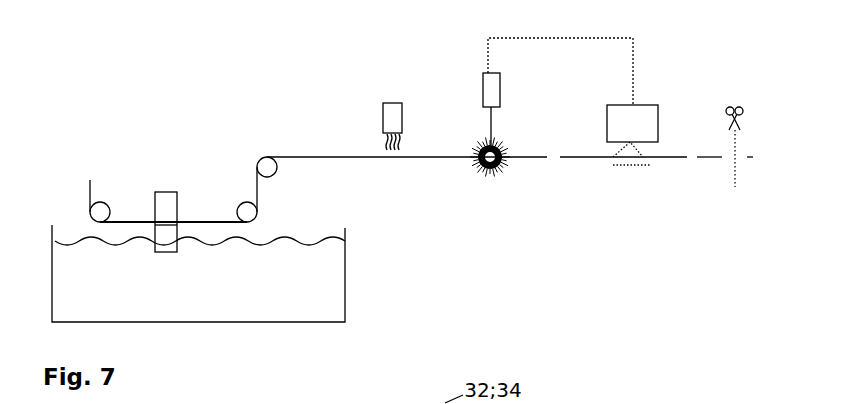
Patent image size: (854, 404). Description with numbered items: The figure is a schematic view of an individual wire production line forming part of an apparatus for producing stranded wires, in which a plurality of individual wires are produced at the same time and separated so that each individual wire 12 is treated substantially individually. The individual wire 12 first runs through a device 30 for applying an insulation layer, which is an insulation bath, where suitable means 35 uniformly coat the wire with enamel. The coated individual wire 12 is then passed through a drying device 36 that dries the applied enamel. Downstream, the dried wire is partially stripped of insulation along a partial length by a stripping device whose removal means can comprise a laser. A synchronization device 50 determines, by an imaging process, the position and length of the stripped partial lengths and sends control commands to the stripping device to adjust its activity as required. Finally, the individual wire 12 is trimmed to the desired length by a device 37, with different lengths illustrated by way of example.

The individual wire 12 is at (592, 158).
The device for applying an insulation layer 30 is at (345, 260).
The means for uniformly coating the individual wire 35 is at (166, 190).
The drying device 36 is at (383, 118).
The synchronization device 50 is at (642, 105).
The trimming device 37 is at (714, 109).